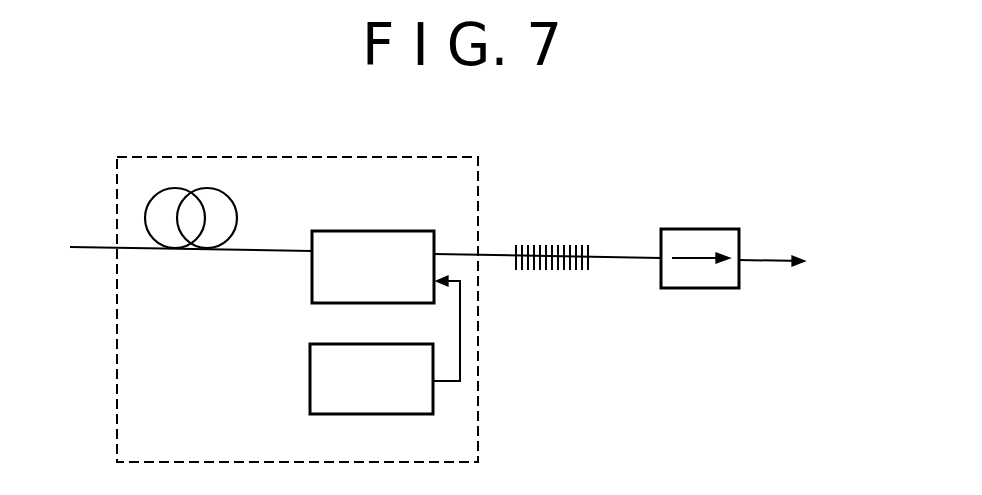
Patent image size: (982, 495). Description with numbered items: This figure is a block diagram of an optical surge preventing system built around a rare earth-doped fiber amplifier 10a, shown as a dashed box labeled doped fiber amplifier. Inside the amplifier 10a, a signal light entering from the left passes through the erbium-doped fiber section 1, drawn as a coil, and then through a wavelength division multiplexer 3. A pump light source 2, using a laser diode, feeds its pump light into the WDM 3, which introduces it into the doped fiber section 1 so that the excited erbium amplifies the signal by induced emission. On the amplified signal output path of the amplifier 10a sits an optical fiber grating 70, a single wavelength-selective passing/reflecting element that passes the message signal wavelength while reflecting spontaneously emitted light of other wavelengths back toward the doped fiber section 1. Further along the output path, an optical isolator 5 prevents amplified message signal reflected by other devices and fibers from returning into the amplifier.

The doped fiber section 1 is at (228, 197).
The pump light source 2 is at (310, 355).
The wavelength division multiplexer 3 is at (434, 231).
The optical isolator 5 is at (695, 229).
The optical fiber grating 70 is at (545, 230).
The rare earth-doped fiber amplifier 10a is at (477, 418).